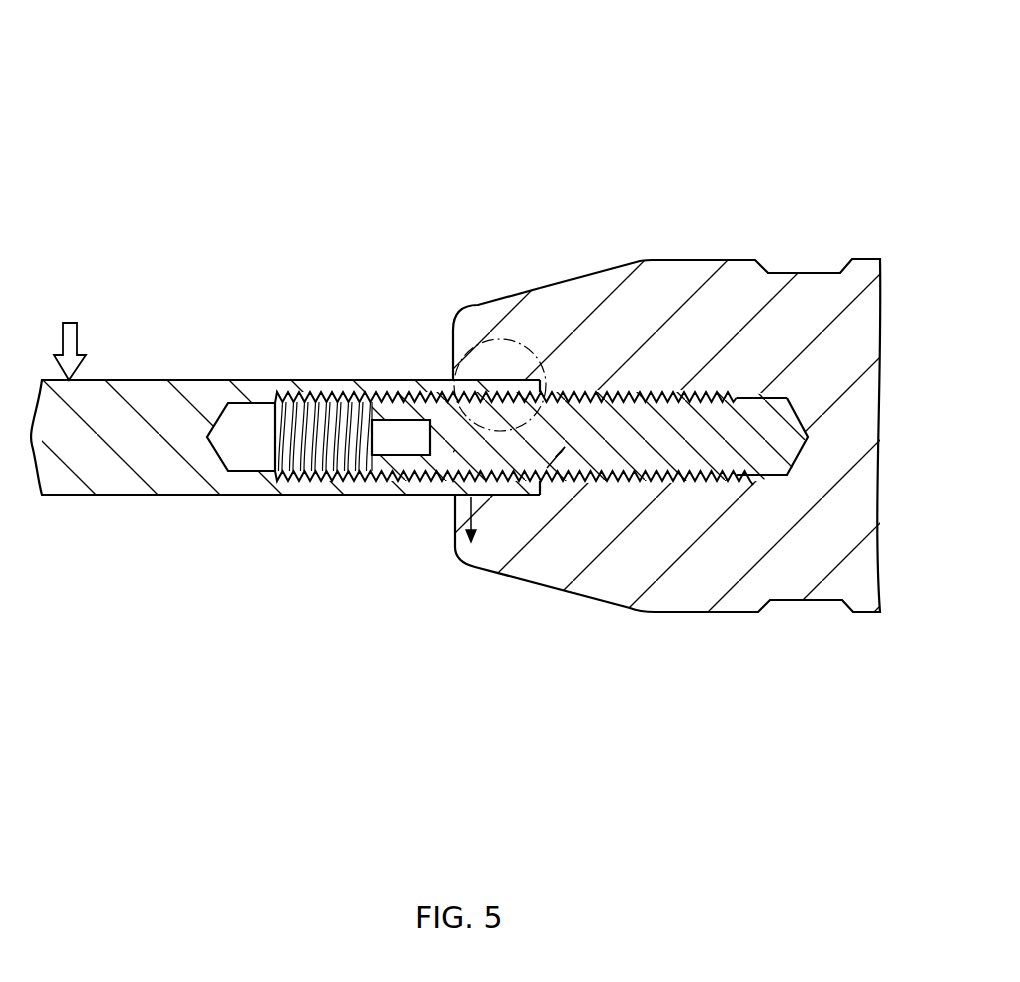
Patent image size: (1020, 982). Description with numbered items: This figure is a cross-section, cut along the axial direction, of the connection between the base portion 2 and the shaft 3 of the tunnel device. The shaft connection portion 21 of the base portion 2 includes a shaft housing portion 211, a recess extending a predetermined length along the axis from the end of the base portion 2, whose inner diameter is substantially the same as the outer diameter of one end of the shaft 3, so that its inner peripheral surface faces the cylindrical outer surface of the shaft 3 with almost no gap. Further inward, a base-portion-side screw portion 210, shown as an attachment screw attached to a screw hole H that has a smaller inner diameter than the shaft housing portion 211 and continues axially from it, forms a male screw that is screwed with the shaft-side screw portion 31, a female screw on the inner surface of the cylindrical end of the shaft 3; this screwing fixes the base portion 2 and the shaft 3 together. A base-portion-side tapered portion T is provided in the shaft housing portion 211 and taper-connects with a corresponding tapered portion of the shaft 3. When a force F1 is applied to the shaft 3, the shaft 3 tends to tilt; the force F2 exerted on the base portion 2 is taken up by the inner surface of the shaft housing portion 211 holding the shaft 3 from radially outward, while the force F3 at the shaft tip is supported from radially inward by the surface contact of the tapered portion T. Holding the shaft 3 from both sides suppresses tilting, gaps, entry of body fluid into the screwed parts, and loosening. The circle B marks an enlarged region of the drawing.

The base portion 2 is at (808, 117).
The shaft connection portion 21 is at (564, 279).
The shaft housing portion 211 is at (487, 378).
The base-portion-side screw portion 210 is at (420, 456).
The shaft 3 is at (184, 500).
The shaft-side screw portion 31 is at (412, 400).
The enlarged region B is at (537, 358).
The base-portion-side tapered portion T is at (541, 384).
The screw hole H is at (690, 410).
The force indicated by arrow F1 is at (80, 348).
The force indicated by arrow F2 is at (468, 498).
The force indicated by arrow F3 is at (547, 468).